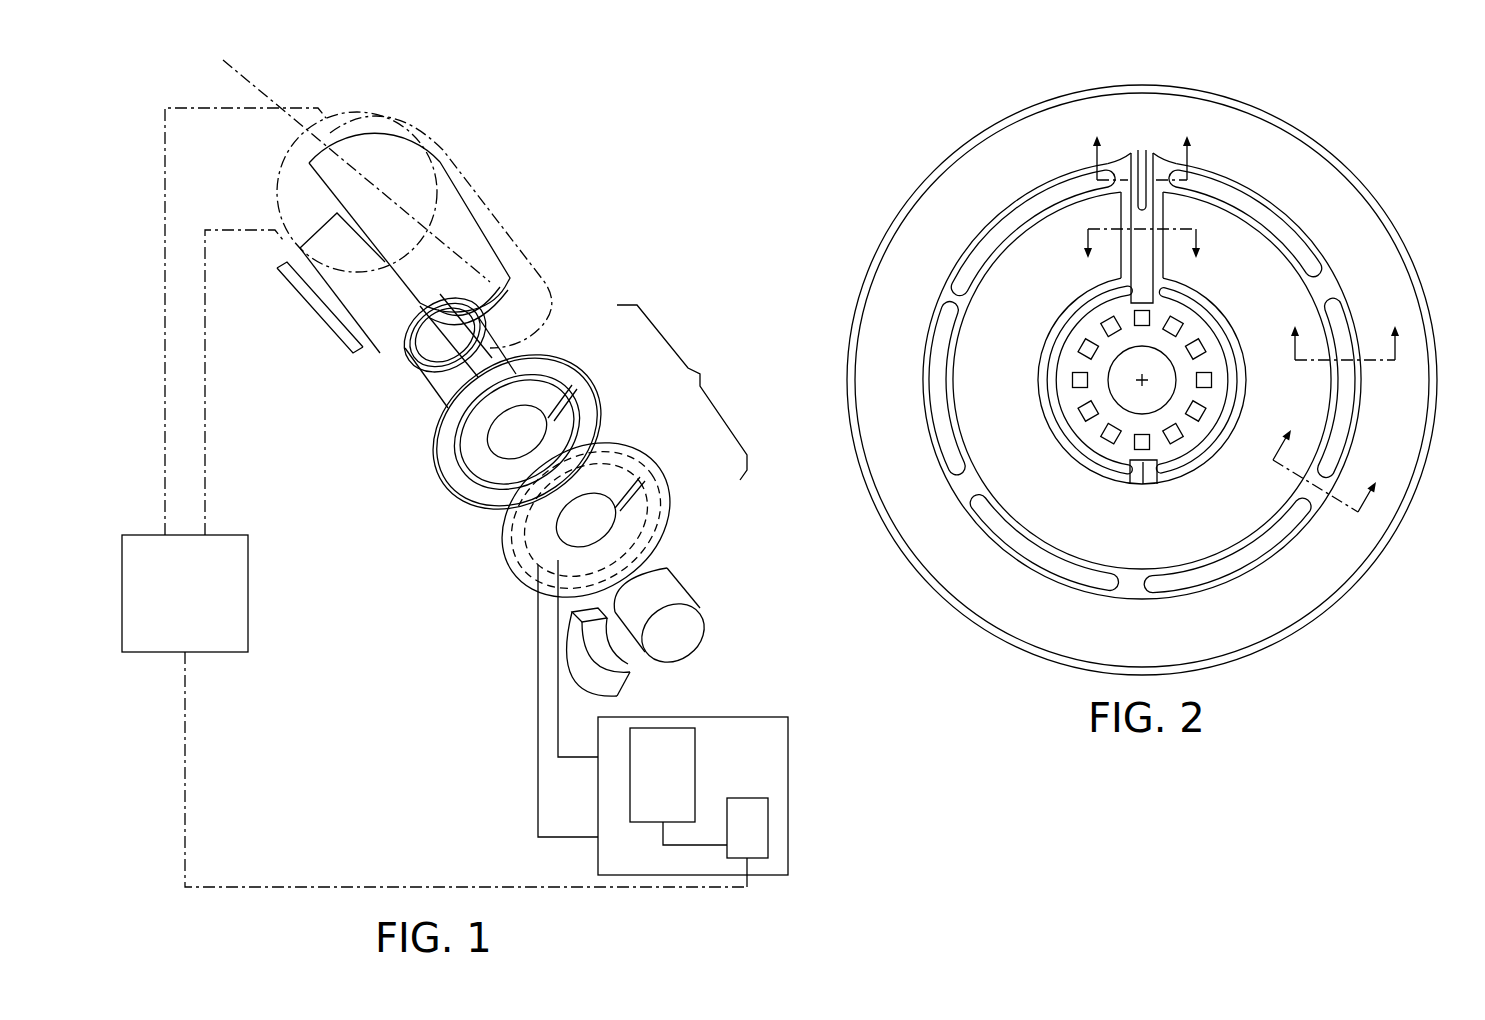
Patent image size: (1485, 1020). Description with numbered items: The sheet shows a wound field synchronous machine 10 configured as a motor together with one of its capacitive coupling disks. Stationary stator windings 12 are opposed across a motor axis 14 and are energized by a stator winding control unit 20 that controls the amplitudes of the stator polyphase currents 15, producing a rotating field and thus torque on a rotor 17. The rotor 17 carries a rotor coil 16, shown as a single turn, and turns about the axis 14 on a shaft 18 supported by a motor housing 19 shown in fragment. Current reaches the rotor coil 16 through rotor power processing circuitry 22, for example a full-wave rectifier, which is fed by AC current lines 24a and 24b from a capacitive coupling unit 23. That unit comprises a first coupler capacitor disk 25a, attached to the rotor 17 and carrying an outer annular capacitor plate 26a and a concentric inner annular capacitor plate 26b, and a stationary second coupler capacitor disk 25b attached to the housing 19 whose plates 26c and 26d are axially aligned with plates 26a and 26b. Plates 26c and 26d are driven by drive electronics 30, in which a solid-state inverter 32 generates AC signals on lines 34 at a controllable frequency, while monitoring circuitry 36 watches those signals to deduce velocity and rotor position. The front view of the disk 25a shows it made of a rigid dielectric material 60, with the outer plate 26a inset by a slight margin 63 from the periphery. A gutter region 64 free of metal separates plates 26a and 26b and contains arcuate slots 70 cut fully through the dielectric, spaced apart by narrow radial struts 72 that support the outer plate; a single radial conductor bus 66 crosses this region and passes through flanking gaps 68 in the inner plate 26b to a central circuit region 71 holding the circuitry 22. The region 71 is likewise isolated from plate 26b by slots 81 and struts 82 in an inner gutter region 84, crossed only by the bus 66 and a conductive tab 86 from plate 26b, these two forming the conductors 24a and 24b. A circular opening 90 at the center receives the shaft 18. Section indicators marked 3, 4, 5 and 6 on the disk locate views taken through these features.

In FIG. 1, the wound field synchronous machine 10 is at (548, 112).
In FIG. 1, the stator windings 12 is at (392, 148).
In FIG. 1, the motor axis 14 is at (248, 84).
In FIG. 2, the motor axis 14 is at (1144, 383).
In FIG. 1, the stator polyphase currents 15 is at (205, 382).
In FIG. 1, the rotor coil 16 is at (323, 223).
In FIG. 1, the rotor 17 is at (290, 188).
In FIG. 1, the shaft 18 is at (668, 590).
In FIG. 1, the motor housing 19 is at (484, 203).
In FIG. 1, the stator winding control unit 20 is at (200, 608).
In FIG. 1, the rotor power processing circuitry 22 is at (527, 308).
In FIG. 1, the capacitive coupling unit 23 is at (682, 392).
In FIG. 1, the AC current line 24a is at (433, 408).
In FIG. 1, the AC current line 24b is at (537, 333).
In FIG. 1, the first coupler capacitor disk 25a is at (511, 432).
In FIG. 2, the first coupler capacitor disk 25a is at (1117, 357).
In FIG. 1, the second coupler capacitor disk 25b is at (578, 520).
In FIG. 1, the annular capacitor plate 26a is at (590, 387).
In FIG. 2, the annular capacitor plate 26a is at (1116, 380).
In FIG. 1, the annular capacitor plate 26b is at (577, 413).
In FIG. 2, the annular capacitor plate 26b is at (1005, 296).
In FIG. 1, the annular capacitor plate 26c is at (657, 462).
In FIG. 1, the annular capacitor plate 26d is at (653, 530).
In FIG. 1, the drive electronics 30 is at (742, 717).
In FIG. 1, the solid-state inverter 32 is at (678, 791).
In FIG. 1, the lines 34 is at (556, 708).
In FIG. 1, the monitoring circuitry 36 is at (755, 823).
In FIG. 2, the dielectric material 60 is at (1421, 281).
In FIG. 2, the margin 63 is at (860, 320).
In FIG. 2, the gutter region 64 is at (948, 306).
In FIG. 2, the conductor bus 66 is at (1148, 150).
In FIG. 2, the flanking gaps 68 is at (1120, 220).
In FIG. 2, the arcuate slots 70 is at (925, 378).
In FIG. 2, the central circuit region 71 is at (1175, 308).
In FIG. 2, the struts 72 is at (1318, 488).
In FIG. 2, the slots 81 is at (1202, 434).
In FIG. 2, the struts 82 is at (1246, 380).
In FIG. 2, the gutter region 84 is at (1128, 481).
In FIG. 2, the conductive tab 86 is at (1142, 482).
In FIG. 2, the circular opening 90 is at (1116, 384).
In FIG. 2, the section line 3- 3 is at (1142, 256).
In FIG. 2, the section line 4- 4 is at (1332, 460).
In FIG. 2, the section line 5- 5 is at (1345, 334).
In FIG. 2, the section line 6- 6 is at (1138, 146).